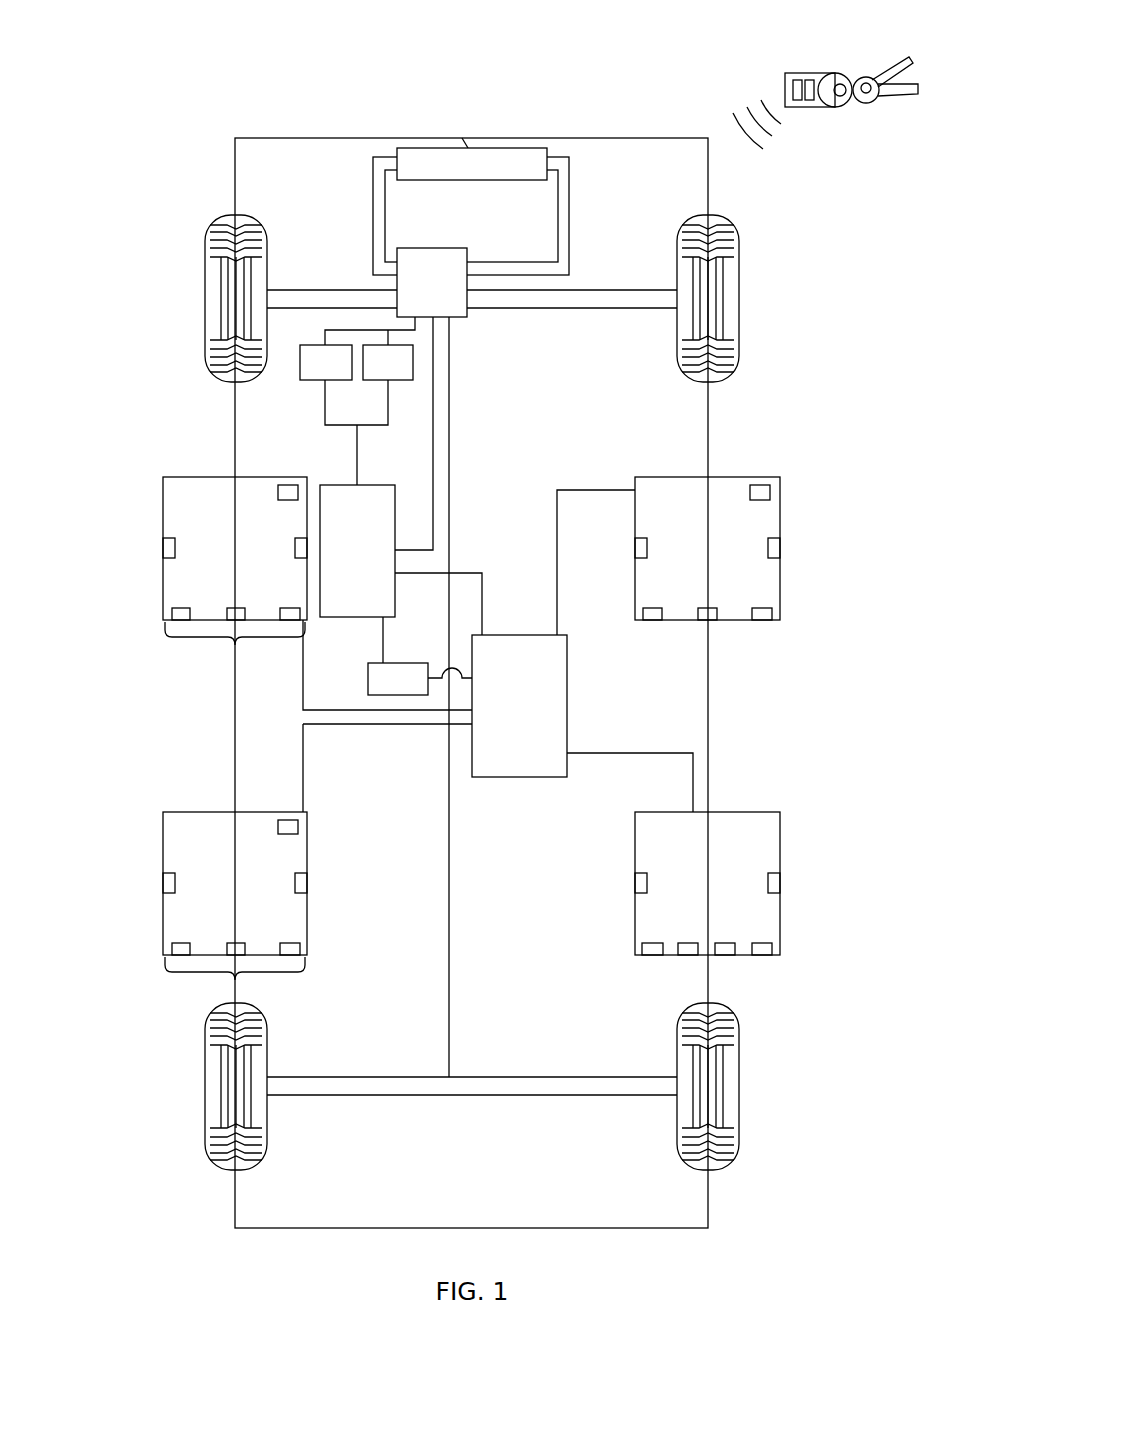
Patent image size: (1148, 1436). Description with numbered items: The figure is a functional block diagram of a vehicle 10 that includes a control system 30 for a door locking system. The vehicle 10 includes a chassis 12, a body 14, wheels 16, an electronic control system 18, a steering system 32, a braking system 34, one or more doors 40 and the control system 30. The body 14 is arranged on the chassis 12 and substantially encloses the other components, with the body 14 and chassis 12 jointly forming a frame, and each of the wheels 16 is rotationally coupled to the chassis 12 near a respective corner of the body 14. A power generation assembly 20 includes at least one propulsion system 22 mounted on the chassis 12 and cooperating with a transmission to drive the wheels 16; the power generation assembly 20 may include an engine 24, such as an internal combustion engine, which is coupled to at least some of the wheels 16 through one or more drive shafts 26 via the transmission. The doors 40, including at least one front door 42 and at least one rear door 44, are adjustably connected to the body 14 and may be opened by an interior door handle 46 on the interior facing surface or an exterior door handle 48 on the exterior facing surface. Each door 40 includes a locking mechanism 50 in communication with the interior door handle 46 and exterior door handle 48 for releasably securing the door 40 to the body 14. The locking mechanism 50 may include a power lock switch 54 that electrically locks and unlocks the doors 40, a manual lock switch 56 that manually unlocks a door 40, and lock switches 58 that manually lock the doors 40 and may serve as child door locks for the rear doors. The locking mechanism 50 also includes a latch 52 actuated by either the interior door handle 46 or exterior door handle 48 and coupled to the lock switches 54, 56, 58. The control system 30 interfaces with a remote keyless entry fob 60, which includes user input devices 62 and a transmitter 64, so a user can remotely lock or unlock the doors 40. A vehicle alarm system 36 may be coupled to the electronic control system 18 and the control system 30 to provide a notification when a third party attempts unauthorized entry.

The vehicle 10 is at (217, 93).
The chassis 12 is at (449, 758).
The body 14 is at (235, 703).
The wheels 16 is at (205, 290).
The electronic control system 18 is at (345, 617).
The power generation assembly 20 is at (460, 320).
The propulsion system 22 is at (443, 248).
The engine 24 is at (424, 255).
The drive shafts 26 is at (318, 290).
The control system 30 is at (515, 777).
The steering system 32 is at (325, 380).
The braking system 34 is at (397, 380).
The vehicle alarm system 36 is at (410, 663).
The doors 40 is at (158, 438).
The front door 42 is at (218, 477).
The rear door 44 is at (200, 812).
The interior door handle 46 is at (302, 560).
The exterior door handle 48 is at (163, 545).
The locking mechanism 50 is at (235, 641).
The latch 52 is at (285, 485).
The power lock switch 54 is at (172, 612).
The manual lock switch 56 is at (232, 608).
The lock switches 58 is at (288, 943).
The fob 60 is at (832, 72).
The user input devices 62 is at (797, 107).
The transmitter 64 is at (765, 118).